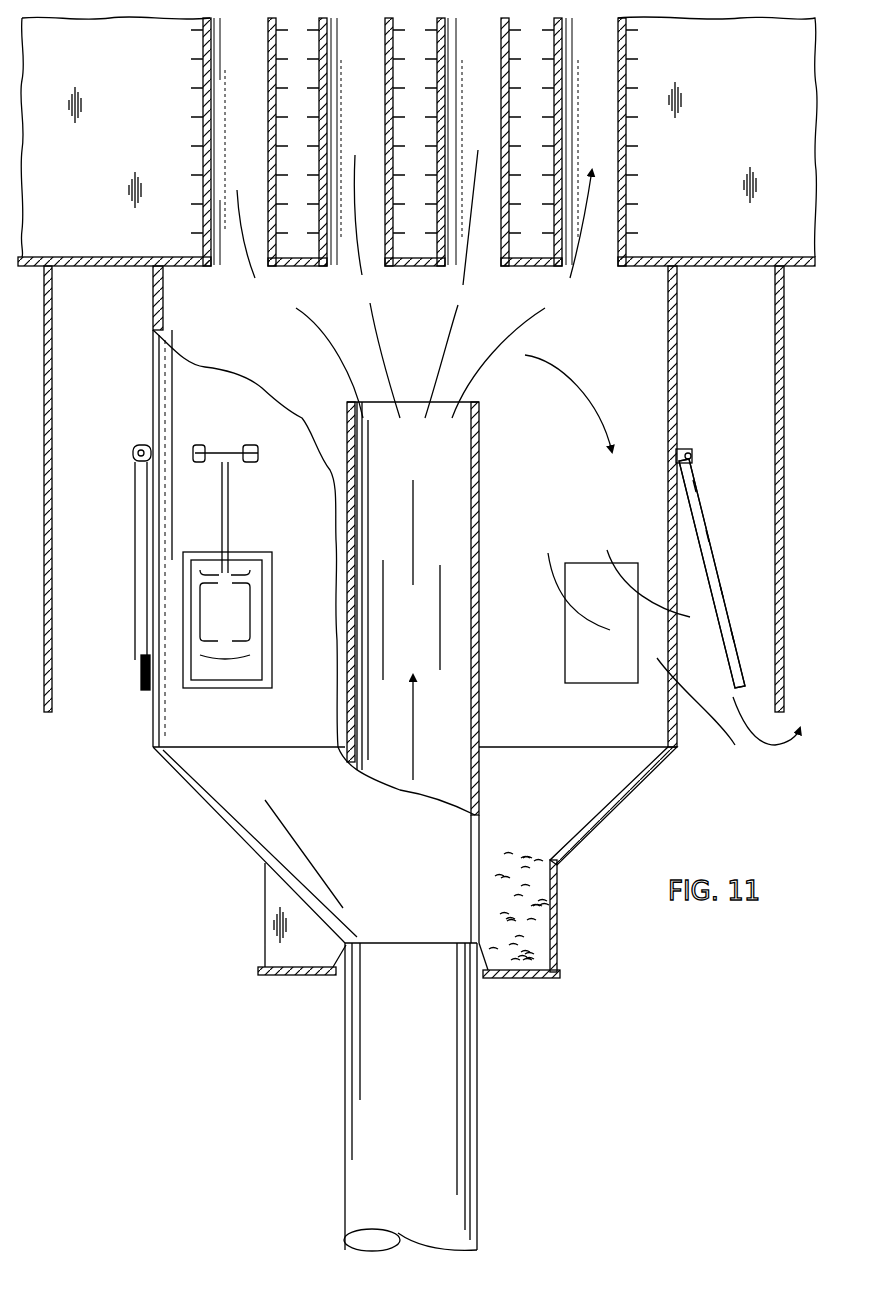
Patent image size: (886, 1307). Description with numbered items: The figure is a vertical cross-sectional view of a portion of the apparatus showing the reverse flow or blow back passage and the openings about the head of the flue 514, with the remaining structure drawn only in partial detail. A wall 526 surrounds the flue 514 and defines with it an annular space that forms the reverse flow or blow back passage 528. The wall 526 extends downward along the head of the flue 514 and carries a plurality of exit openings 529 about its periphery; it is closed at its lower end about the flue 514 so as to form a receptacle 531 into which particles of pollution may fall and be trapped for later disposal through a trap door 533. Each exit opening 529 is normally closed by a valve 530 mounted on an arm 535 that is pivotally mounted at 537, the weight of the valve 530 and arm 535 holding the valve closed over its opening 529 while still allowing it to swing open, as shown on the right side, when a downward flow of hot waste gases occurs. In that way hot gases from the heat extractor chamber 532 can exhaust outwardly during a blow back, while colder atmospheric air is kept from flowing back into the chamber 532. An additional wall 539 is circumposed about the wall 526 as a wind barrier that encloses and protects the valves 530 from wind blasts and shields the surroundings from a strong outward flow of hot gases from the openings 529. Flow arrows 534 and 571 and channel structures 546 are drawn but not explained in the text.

The flue 514 is at (479, 425).
The wall 526 is at (677, 345).
The reverse flow or blow back passage 528 is at (628, 452).
The exit opening 529 is at (588, 683).
The valve 530 is at (143, 676).
The receptacle 531 is at (545, 915).
The heat extractor chamber 532 is at (634, 283).
The trap door 533 is at (520, 978).
The gas flow 534 is at (520, 336).
The arm 535 is at (708, 505).
The pivot 537 is at (692, 455).
The additional wall 539 is at (785, 400).
The cooling channels 546 is at (461, 253).
The flow path 571 is at (720, 745).